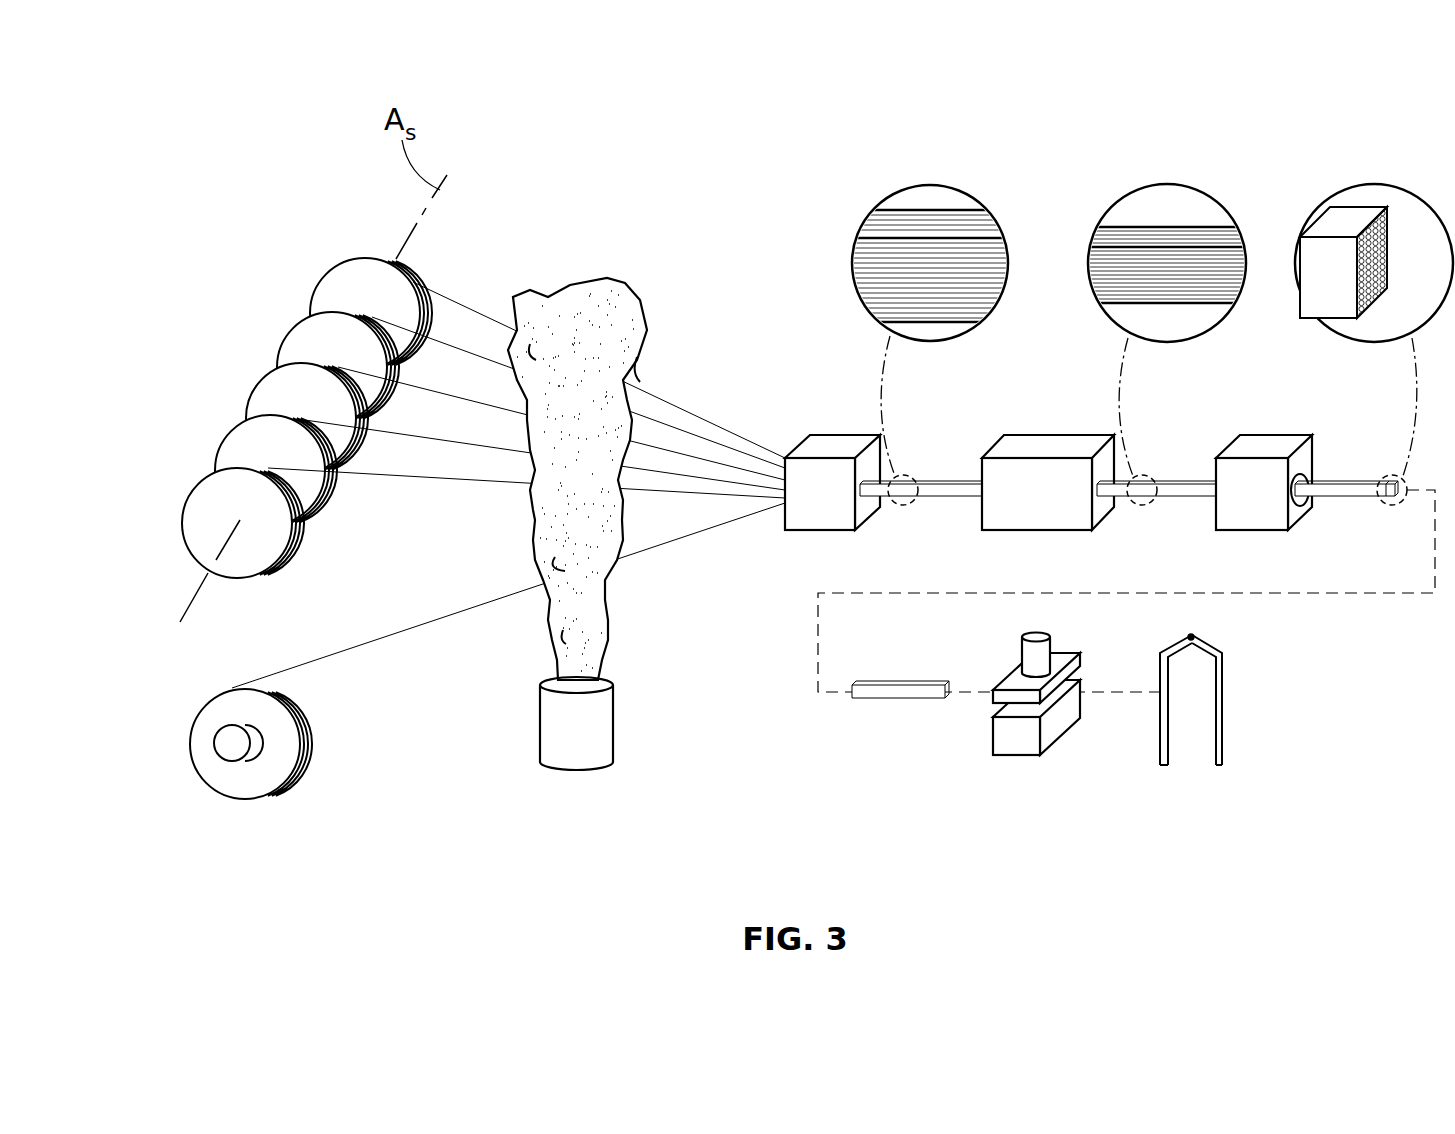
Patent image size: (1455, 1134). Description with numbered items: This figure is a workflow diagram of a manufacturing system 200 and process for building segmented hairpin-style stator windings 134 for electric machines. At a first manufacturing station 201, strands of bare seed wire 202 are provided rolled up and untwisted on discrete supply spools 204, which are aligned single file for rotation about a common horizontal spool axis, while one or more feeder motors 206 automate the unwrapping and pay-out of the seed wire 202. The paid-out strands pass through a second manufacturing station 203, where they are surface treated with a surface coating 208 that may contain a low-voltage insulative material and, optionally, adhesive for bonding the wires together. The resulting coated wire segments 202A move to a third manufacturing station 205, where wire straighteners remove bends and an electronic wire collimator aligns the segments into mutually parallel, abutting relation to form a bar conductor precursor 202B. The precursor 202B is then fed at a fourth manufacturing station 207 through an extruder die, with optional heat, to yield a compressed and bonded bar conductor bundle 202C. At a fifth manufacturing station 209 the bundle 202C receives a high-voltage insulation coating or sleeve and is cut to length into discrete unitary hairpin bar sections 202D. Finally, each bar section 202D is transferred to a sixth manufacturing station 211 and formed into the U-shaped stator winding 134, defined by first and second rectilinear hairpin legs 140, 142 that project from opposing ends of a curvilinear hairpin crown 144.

The manufacturing system 200 is at (1262, 172).
The first manufacturing station 201 is at (202, 246).
The seed wire 202 is at (463, 300).
The coated wire segments 202A is at (660, 400).
The bar conductor precursor 202B is at (930, 482).
The bar conductor bundle 202C is at (1167, 482).
The unitary hairpin bar section 202D is at (1378, 480).
The second manufacturing station 203 is at (520, 752).
The supply spool 204 is at (338, 263).
The third manufacturing station 205 is at (826, 415).
The feeder motor 206 is at (226, 762).
The fourth manufacturing station 207 is at (1057, 415).
The surface coating 208 is at (632, 282).
The fifth manufacturing station 209 is at (1262, 415).
The sixth manufacturing station 211 is at (1017, 772).
The stator winding 134 is at (1185, 758).
The first hairpin leg 140 is at (1163, 750).
The second hairpin leg 142 is at (1225, 752).
The hairpin crown 144 is at (1207, 647).